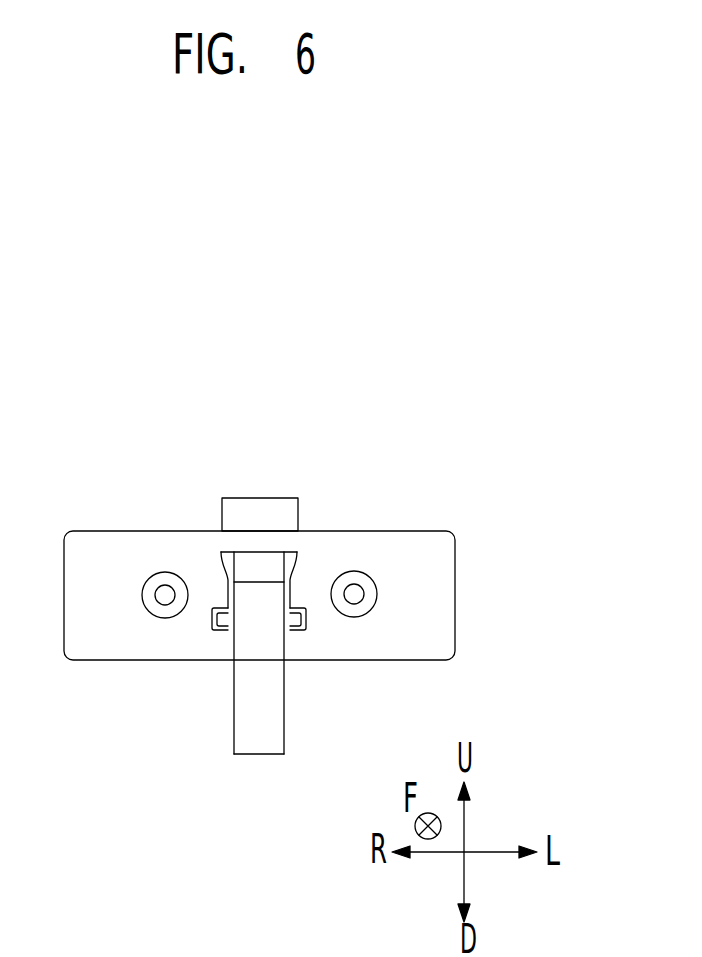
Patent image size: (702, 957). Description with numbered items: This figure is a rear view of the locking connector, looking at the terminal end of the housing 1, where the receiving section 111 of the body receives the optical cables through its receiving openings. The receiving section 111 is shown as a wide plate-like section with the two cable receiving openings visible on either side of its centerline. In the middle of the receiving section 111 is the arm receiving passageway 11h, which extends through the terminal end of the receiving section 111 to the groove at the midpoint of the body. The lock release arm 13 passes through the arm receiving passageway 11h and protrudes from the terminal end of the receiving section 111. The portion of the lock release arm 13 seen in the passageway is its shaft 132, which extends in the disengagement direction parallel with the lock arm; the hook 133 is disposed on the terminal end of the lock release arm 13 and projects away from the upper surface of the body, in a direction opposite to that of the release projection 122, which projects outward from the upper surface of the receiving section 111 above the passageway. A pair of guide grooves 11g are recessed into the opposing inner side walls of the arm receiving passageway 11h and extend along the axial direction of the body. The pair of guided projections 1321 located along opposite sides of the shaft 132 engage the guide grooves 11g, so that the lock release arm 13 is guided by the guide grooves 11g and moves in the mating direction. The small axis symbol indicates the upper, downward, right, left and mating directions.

The housing 1 is at (256, 404).
The receiving section 111 is at (457, 553).
The release projection 122 is at (259, 498).
The arm receiving passageway 11h is at (302, 550).
The shaft 132 is at (247, 568).
The guided projections 1321 is at (288, 632).
The guide grooves 11g is at (224, 632).
The lock release arm 13 is at (254, 770).
The hook 133 is at (233, 746).